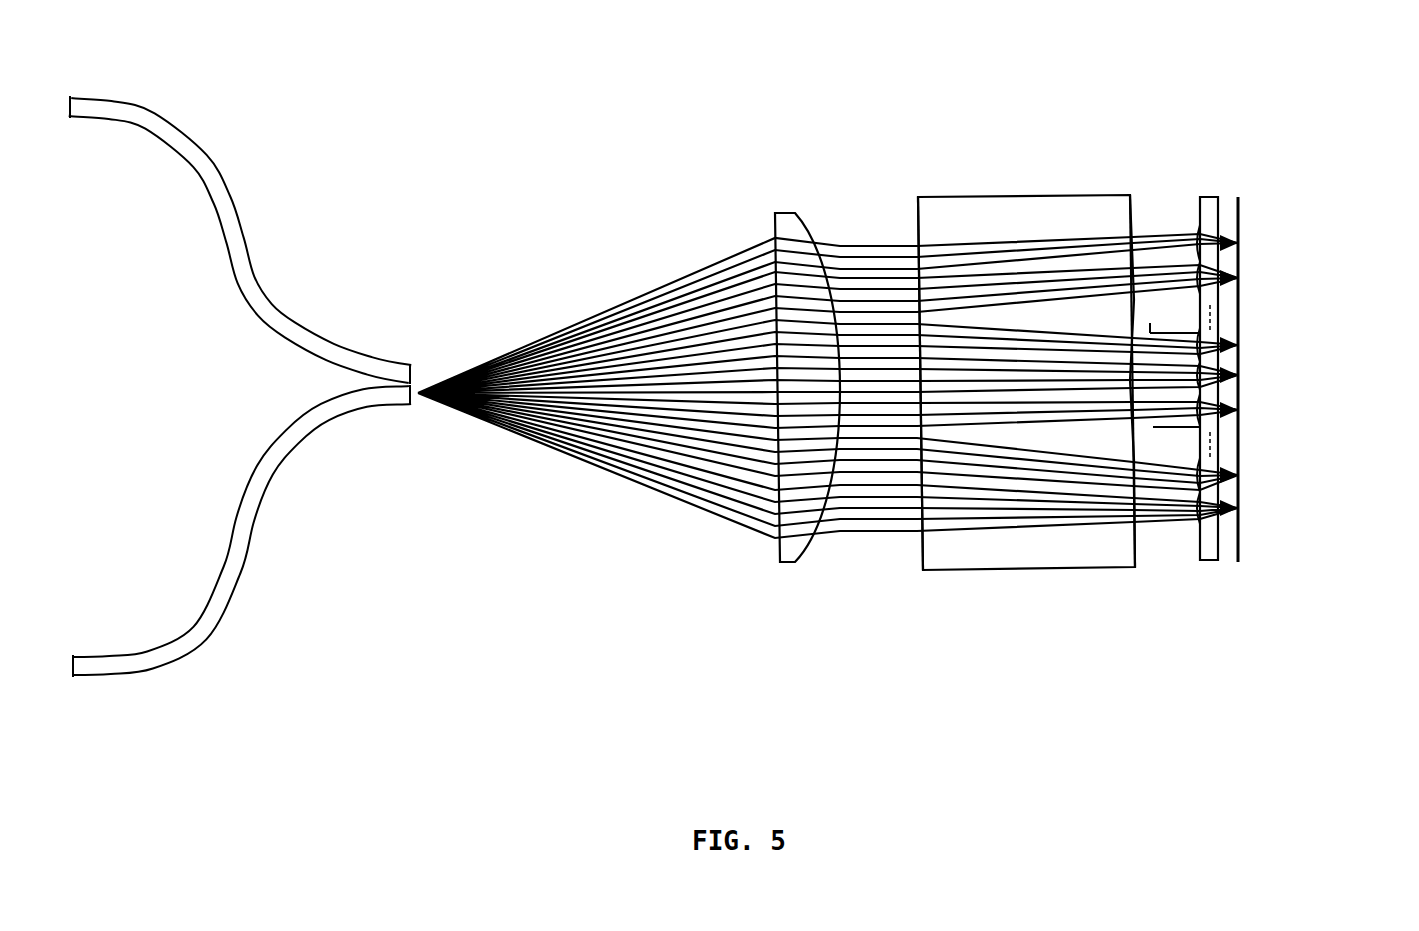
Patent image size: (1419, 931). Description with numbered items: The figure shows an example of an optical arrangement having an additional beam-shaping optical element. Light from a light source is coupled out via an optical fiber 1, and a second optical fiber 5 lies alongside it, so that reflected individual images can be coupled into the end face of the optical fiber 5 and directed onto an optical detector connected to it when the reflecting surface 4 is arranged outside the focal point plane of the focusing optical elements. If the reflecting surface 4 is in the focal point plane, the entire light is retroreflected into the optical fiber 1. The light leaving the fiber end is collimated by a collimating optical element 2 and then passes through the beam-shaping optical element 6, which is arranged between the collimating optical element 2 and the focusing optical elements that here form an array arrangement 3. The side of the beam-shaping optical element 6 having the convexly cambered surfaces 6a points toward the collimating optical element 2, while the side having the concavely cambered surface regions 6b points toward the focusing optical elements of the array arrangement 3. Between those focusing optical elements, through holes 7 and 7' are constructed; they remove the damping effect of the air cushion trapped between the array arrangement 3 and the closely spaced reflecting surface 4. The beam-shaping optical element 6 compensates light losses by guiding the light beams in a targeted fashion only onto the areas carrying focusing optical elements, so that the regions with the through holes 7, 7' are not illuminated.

The optical fiber 1 is at (226, 550).
The optical fiber 5 is at (230, 195).
The collimating optical element 2 is at (768, 222).
The beam-shaping optical element 6 is at (1001, 193).
The convexly cambered surfaces 6a is at (910, 562).
The concavely cambered surface regions 6b is at (1123, 542).
The array arrangement 3 is at (1203, 210).
The through hole 7 is at (1293, 257).
The through hole 7' is at (1300, 383).
The reflecting surface 4 is at (1254, 447).